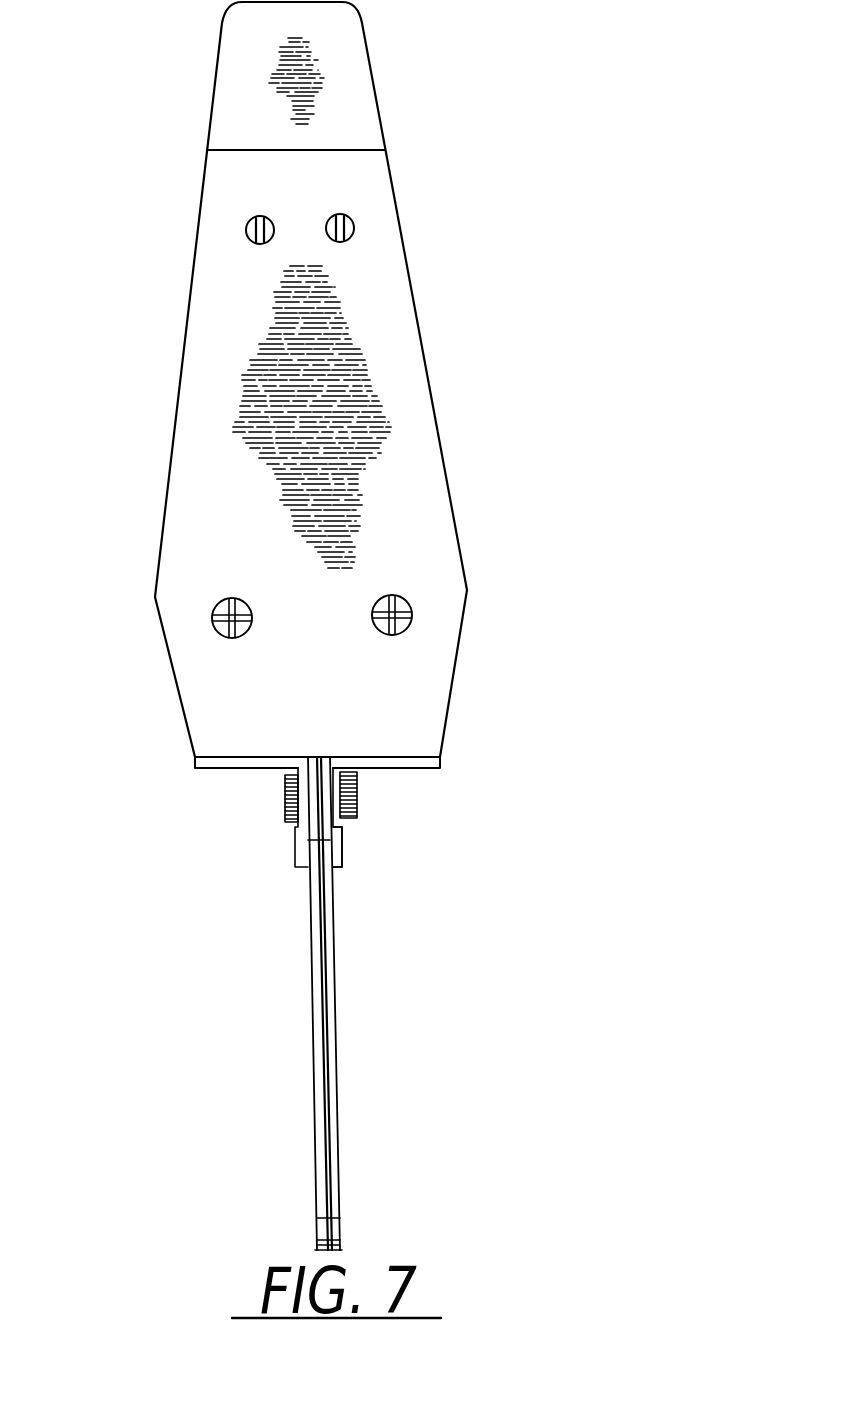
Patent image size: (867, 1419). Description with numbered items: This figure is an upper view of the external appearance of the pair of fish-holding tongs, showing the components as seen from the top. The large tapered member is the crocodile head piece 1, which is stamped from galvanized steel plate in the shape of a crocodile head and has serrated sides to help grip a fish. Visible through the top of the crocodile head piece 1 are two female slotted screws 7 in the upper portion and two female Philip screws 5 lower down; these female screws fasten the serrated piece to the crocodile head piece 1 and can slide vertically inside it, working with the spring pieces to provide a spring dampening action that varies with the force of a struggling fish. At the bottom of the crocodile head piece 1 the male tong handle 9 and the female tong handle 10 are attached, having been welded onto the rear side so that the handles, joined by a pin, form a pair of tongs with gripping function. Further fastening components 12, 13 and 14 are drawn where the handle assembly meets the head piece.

The crocodile head piece 1 is at (330, 52).
The female Philip screws 5 is at (230, 618).
The female slotted screws 7 is at (352, 222).
The male tong handle 9 is at (315, 983).
The female tong handle 10 is at (230, 766).
The left nut 12 is at (290, 805).
The sleeve 13 is at (350, 818).
The right nut 14 is at (357, 795).